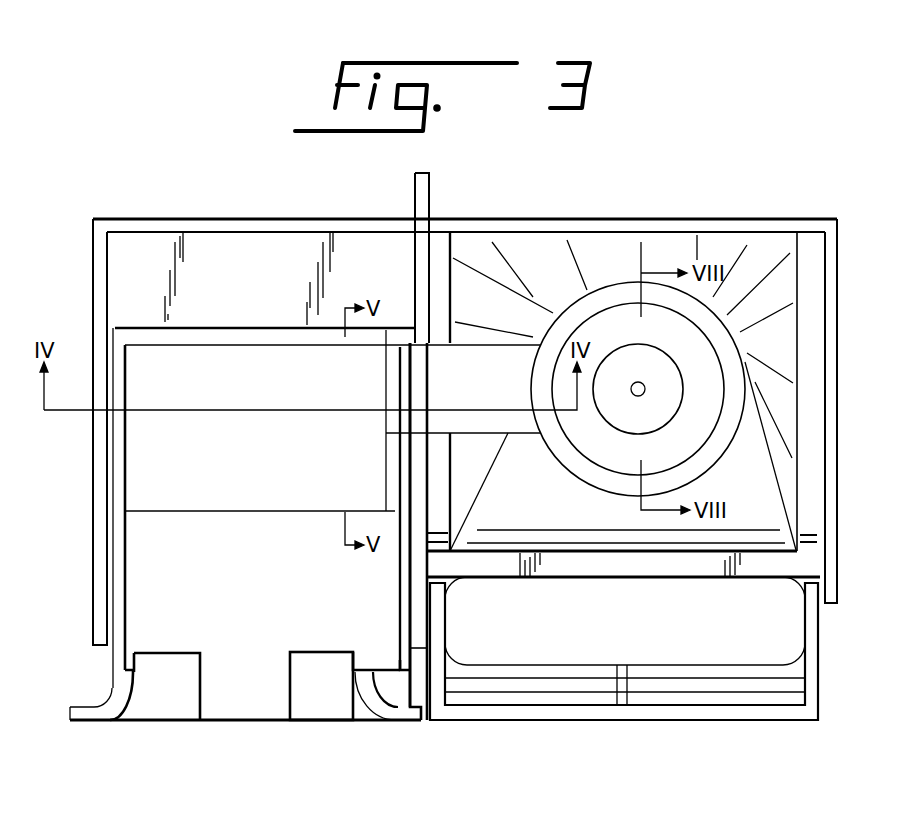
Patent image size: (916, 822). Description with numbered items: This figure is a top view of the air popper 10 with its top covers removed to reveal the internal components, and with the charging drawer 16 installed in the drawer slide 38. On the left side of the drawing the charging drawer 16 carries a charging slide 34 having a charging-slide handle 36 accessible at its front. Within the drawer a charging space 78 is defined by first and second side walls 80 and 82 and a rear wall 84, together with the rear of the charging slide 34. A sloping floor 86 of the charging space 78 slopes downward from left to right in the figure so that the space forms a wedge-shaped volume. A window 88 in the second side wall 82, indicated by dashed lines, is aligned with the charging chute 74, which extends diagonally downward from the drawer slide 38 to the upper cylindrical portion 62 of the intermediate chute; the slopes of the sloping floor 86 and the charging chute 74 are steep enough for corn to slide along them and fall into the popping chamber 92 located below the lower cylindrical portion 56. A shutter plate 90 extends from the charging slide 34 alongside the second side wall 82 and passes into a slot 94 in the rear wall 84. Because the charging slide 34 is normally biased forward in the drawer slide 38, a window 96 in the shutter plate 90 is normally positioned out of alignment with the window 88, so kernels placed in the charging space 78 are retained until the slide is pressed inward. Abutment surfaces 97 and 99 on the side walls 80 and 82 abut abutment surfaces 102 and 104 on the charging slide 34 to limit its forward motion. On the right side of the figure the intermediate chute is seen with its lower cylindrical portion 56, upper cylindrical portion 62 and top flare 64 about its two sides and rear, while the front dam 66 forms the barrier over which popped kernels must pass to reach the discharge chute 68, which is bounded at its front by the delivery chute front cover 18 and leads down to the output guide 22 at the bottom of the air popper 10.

The air popper 10 is at (851, 179).
The charging drawer 16 is at (102, 708).
The delivery chute front cover 18 is at (810, 677).
The output guide 22 is at (453, 648).
The charging slide 34 is at (322, 655).
The charging-slide handle 36 is at (275, 688).
The drawer slide 38 is at (97, 613).
The lower cylindrical portion 56 is at (638, 389).
The upper cylindrical portion 62 is at (668, 283).
The top flare 64 is at (630, 297).
The front dam 66 is at (527, 528).
The discharge chute 68 is at (782, 620).
The charging chute 74 is at (445, 360).
The charging space 78 is at (228, 363).
The first side wall 80 is at (116, 455).
The second side wall 82 is at (405, 470).
The rear wall 84 is at (137, 337).
The sloping floor 86 is at (202, 362).
The window 88 is at (409, 380).
The shutter plate 90 is at (385, 393).
The popping chamber 92 is at (598, 327).
The slot 94 is at (352, 378).
The window 96 is at (383, 449).
The abutment surface 97 is at (132, 675).
The abutment surface 99 is at (392, 690).
The abutment surface 102 is at (127, 667).
The abutment surface 104 is at (392, 690).